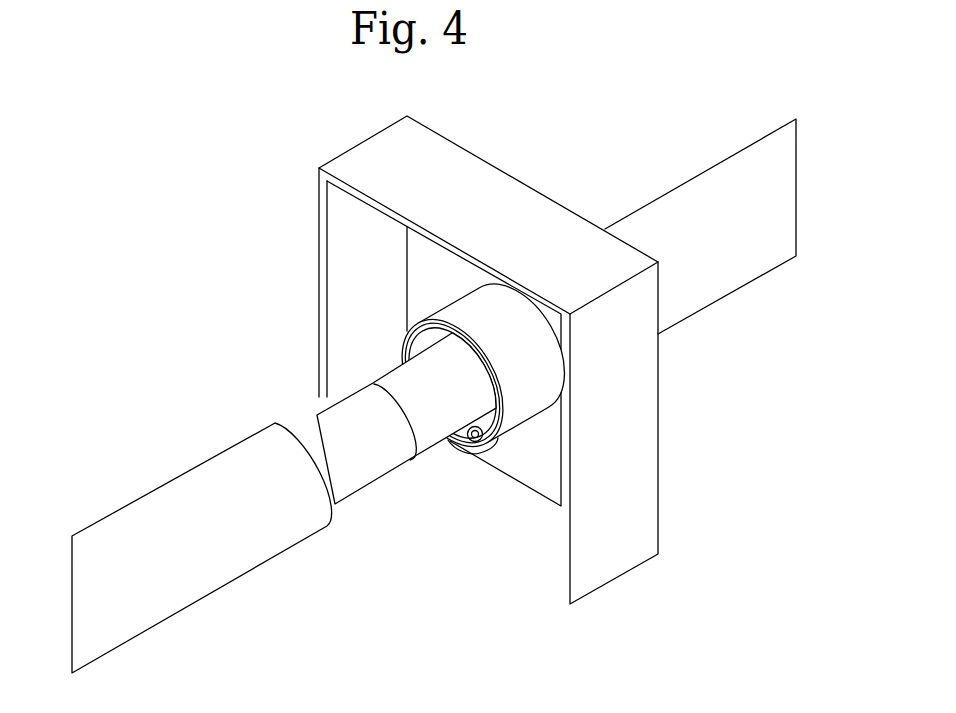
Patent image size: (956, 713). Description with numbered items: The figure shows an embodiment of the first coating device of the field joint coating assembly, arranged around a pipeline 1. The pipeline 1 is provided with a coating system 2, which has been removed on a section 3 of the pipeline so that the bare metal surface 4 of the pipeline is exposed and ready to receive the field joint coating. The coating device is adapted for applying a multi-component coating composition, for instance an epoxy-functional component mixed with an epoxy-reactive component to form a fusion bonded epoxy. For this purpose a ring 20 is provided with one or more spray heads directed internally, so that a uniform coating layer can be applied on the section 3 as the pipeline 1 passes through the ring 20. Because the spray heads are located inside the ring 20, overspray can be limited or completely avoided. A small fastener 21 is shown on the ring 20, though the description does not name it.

The pipeline 1 is at (148, 343).
The coating system 2 is at (168, 600).
The section of the pipeline 3 is at (413, 496).
The metal surface 4 is at (317, 425).
The ring 20 is at (457, 312).
The set screw 21 is at (473, 442).